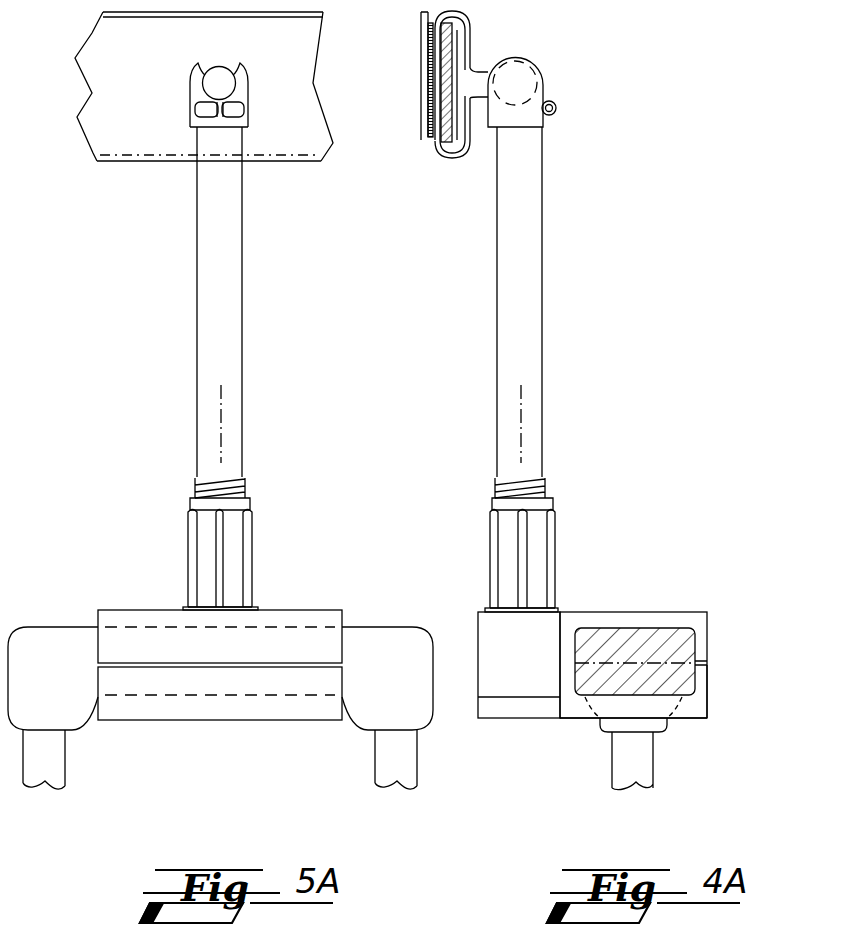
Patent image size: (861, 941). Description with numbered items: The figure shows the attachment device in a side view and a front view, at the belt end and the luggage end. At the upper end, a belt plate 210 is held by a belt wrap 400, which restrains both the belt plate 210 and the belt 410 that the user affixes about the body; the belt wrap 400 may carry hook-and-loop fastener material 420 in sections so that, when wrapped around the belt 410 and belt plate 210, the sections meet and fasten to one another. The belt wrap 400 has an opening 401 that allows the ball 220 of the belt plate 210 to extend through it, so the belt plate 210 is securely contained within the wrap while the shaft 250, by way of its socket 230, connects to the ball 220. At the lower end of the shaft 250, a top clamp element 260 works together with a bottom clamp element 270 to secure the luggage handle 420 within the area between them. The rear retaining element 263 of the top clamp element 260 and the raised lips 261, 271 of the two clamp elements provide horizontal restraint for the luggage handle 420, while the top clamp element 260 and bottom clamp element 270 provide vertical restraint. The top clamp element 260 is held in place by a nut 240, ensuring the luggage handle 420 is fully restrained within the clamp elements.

In FIG. 4A, the belt plate 210 is at (462, 12).
In FIG. 5A, the ball 220 is at (218, 62).
In FIG. 4A, the ball 220 is at (537, 63).
In FIG. 5A, the socket 230 is at (255, 97).
In FIG. 4A, the socket 230 is at (553, 122).
In FIG. 5A, the nut 240 is at (253, 573).
In FIG. 4A, the nut 240 is at (555, 573).
In FIG. 5A, the shaft 250 is at (242, 312).
In FIG. 4A, the shaft 250 is at (542, 303).
In FIG. 5A, the top clamp element 260 is at (310, 610).
In FIG. 4A, the top clamp element 260 is at (612, 610).
In FIG. 5A, the raised lip 261 is at (343, 643).
In FIG. 4A, the raised lip 261 is at (708, 635).
In FIG. 4A, the rear retaining element 263 is at (568, 678).
In FIG. 5A, the bottom clamp element 270 is at (172, 720).
In FIG. 4A, the bottom clamp element 270 is at (582, 723).
In FIG. 5A, the raised lip 271 is at (97, 687).
In FIG. 4A, the raised lip 271 is at (708, 705).
In FIG. 5A, the belt wrap 400 is at (320, 93).
In FIG. 4A, the belt wrap 400 is at (432, 157).
In FIG. 4A, the opening 401 is at (467, 67).
In FIG. 4A, the belt 410 is at (448, 143).
In FIG. 5A, the luggage handle 420 is at (87, 625).
In FIG. 4A, the luggage handle 420 is at (430, 125).